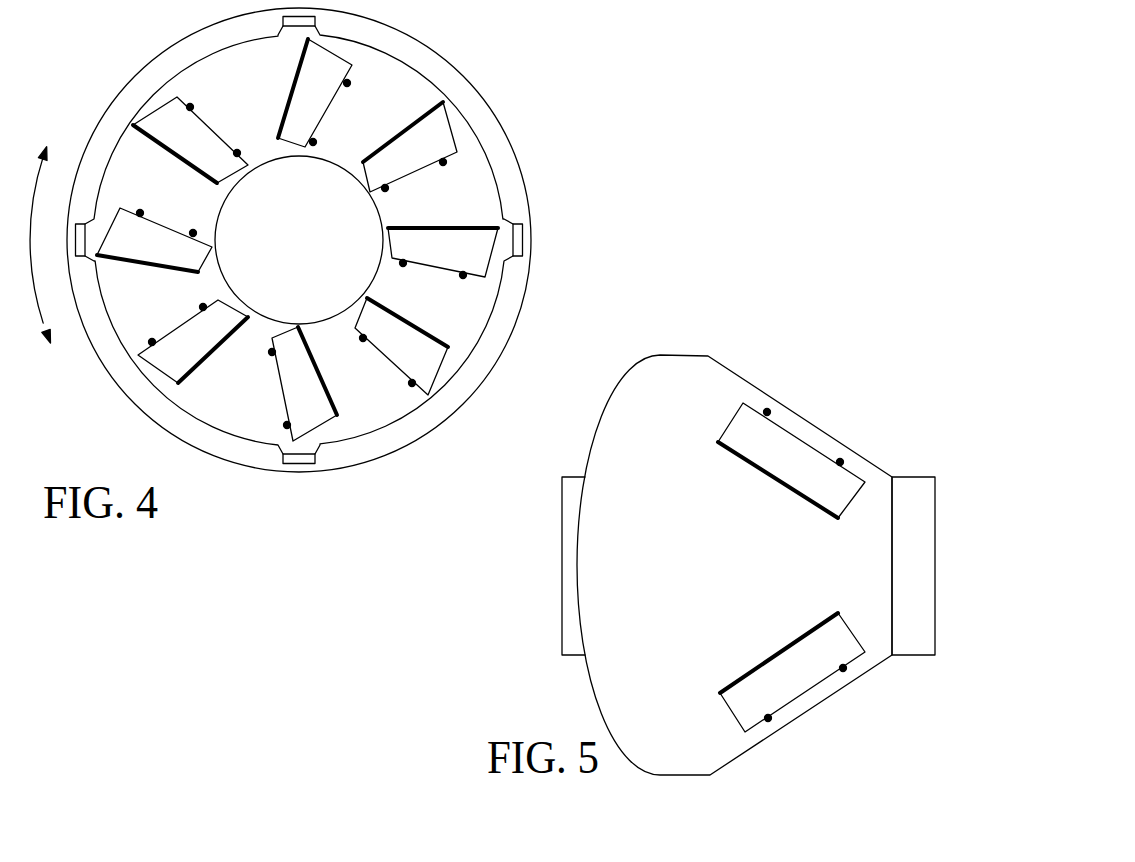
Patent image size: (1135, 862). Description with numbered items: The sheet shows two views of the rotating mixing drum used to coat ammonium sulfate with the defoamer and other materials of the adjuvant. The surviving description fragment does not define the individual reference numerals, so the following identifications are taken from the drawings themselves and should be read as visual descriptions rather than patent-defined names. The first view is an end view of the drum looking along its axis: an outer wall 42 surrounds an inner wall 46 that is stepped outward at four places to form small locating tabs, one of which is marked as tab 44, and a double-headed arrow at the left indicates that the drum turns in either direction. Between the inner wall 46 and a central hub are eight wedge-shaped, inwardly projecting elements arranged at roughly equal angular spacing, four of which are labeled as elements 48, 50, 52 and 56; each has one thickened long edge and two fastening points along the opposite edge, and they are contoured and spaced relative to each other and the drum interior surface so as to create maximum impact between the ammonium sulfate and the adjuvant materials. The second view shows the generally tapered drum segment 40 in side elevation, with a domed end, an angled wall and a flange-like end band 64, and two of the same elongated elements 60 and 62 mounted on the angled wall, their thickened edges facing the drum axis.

In FIG. 5, the rotor segment 40 is at (725, 358).
In FIG. 4, the outer ring 42 is at (508, 332).
In FIG. 4, the tab 44 is at (525, 240).
In FIG. 4, the inner ring 46 is at (468, 192).
In FIG. 4, the magnet 48 is at (322, 410).
In FIG. 4, the magnet 50 is at (172, 358).
In FIG. 4, the magnet 52 is at (442, 123).
In FIG. 4, the magnet 56 is at (462, 242).
In FIG. 5, the magnet 60 is at (803, 473).
In FIG. 5, the magnet 62 is at (785, 677).
In FIG. 5, the tab 64 is at (918, 492).